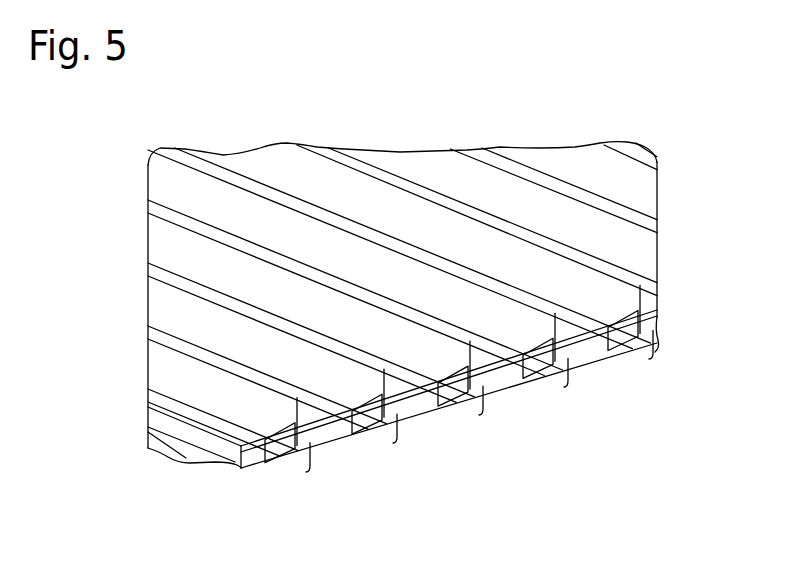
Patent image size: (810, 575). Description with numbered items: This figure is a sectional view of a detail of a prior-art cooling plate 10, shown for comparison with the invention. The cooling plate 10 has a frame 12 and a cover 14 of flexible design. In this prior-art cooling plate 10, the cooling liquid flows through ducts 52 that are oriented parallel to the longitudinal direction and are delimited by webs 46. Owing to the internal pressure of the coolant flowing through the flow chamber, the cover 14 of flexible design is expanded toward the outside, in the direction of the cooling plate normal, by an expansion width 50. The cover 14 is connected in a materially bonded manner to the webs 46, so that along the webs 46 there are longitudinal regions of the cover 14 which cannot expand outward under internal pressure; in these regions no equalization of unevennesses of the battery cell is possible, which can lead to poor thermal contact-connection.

The cooling plate 10 is at (538, 113).
The frame 12 is at (648, 362).
The cover of flexible design 14 is at (657, 203).
The webs 46 is at (351, 425).
The expansion width 50 is at (314, 425).
The ducts 52 is at (401, 433).